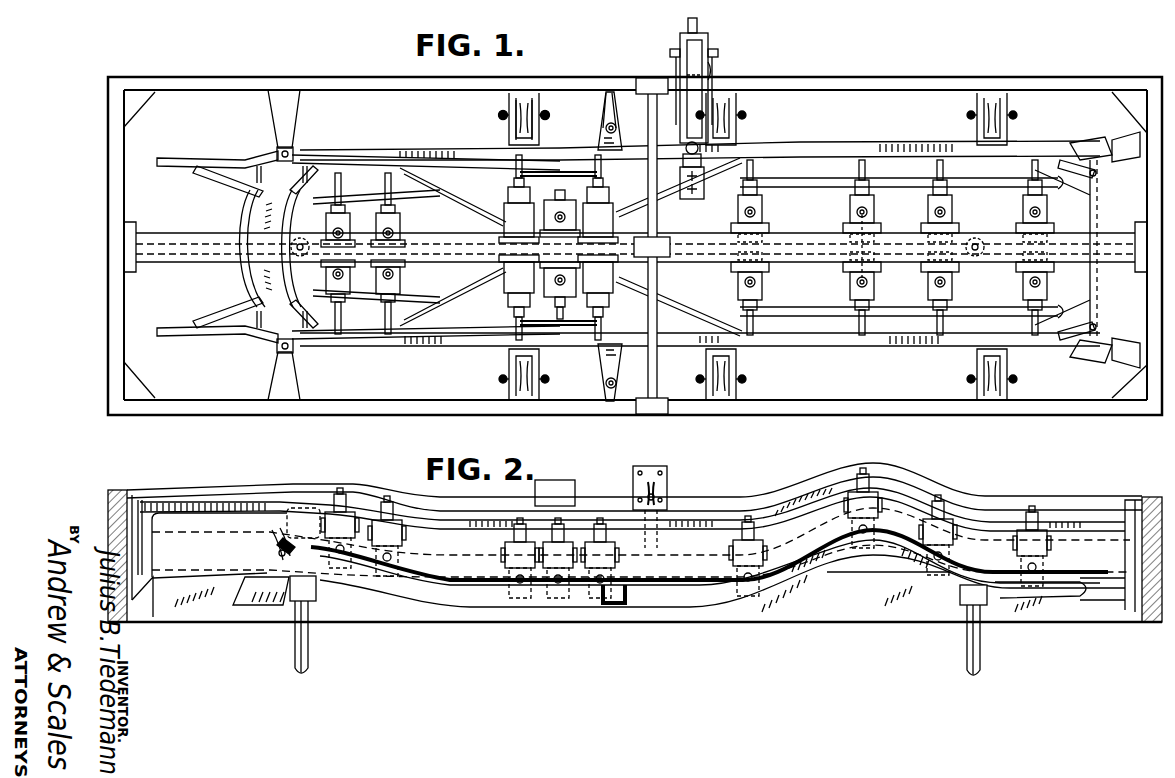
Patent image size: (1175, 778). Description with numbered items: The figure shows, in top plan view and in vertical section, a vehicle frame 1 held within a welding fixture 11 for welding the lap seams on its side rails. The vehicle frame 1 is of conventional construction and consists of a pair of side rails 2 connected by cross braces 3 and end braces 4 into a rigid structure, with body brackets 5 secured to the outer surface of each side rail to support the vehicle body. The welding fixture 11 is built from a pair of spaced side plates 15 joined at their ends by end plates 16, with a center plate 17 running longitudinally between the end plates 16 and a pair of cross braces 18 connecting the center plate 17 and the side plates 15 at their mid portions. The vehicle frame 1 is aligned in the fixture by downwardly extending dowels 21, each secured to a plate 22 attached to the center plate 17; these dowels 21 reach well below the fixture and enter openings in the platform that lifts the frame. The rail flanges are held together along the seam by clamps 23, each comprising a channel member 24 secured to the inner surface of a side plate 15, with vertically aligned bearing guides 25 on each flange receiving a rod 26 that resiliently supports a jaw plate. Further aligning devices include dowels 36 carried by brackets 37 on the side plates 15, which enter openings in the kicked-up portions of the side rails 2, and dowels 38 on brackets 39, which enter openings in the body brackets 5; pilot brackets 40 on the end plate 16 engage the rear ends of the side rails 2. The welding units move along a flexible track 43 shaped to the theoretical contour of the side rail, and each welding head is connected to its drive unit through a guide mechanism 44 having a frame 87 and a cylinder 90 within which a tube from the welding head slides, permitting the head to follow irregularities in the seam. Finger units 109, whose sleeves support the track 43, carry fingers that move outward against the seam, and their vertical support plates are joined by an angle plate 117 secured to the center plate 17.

In FIG. 1, the vehicle frame 1 is at (440, 153).
In FIG. 2, the vehicle frame 1 is at (408, 606).
In FIG. 1, the side rails 2 is at (805, 146).
In FIG. 2, the side rails 2 is at (704, 607).
In FIG. 1, the cross braces 3 is at (668, 306).
In FIG. 1, the end braces 4 is at (245, 208).
In FIG. 2, the end braces 4 is at (262, 608).
In FIG. 1, the body brackets 5 is at (604, 124).
In FIG. 2, the body brackets 5 is at (625, 603).
In FIG. 1, the welding fixture 11 is at (340, 80).
In FIG. 2, the welding fixture 11 is at (117, 492).
In FIG. 1, the side plates 15 is at (244, 77).
In FIG. 2, the side plates 15 is at (890, 621).
In FIG. 1, the end plates 16 is at (108, 181).
In FIG. 2, the end plates 16 is at (108, 500).
In FIG. 1, the center plate 17 is at (175, 233).
In FIG. 2, the center plate 17 is at (294, 483).
In FIG. 1, the cross braces 18 is at (648, 127).
In FIG. 2, the cross braces 18 is at (667, 486).
In FIG. 2, the dowels 21 is at (308, 645).
In FIG. 2, the plate 22 is at (317, 594).
In FIG. 1, the clamps 23 is at (509, 133).
In FIG. 1, the channel member 24 is at (508, 97).
In FIG. 1, the bearing guides 25 is at (499, 116).
In FIG. 1, the rod 26 is at (547, 120).
In FIG. 1, the dowels 36 is at (292, 152).
In FIG. 2, the dowels 36 is at (274, 547).
In FIG. 1, the brackets 37 is at (299, 122).
In FIG. 2, the brackets 37 is at (276, 535).
In FIG. 1, the dowels 38 is at (608, 123).
In FIG. 1, the brackets 39 is at (616, 94).
In FIG. 1, the pilot brackets 40 is at (1117, 140).
In FIG. 1, the flexible track 43 is at (829, 178).
In FIG. 1, the welding head guide mechanism 44 is at (713, 42).
In FIG. 1, the frame 87 is at (709, 64).
In FIG. 1, the cylinder 90 is at (703, 74).
In FIG. 1, the finger units 109 is at (404, 275).
In FIG. 2, the finger units 109 is at (406, 532).
In FIG. 1, the angle plate 117 is at (880, 230).